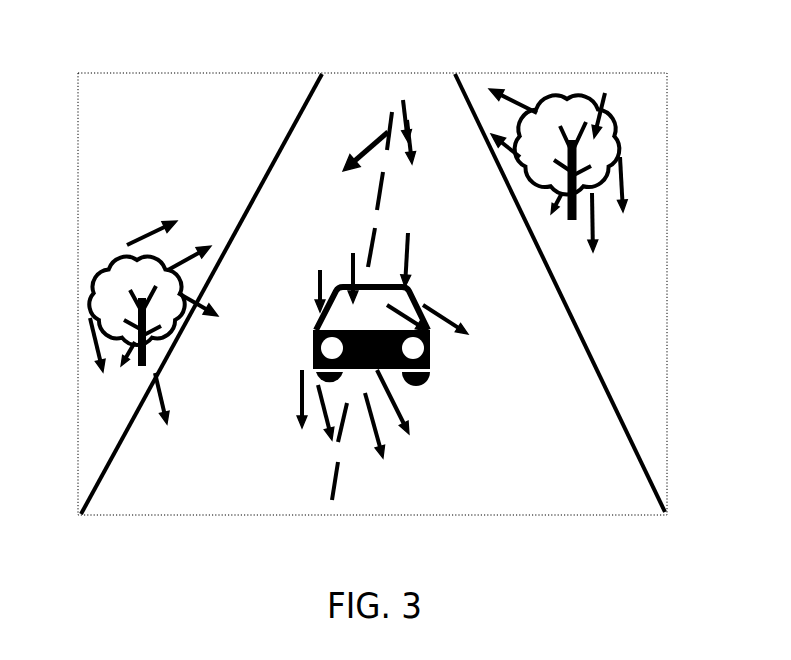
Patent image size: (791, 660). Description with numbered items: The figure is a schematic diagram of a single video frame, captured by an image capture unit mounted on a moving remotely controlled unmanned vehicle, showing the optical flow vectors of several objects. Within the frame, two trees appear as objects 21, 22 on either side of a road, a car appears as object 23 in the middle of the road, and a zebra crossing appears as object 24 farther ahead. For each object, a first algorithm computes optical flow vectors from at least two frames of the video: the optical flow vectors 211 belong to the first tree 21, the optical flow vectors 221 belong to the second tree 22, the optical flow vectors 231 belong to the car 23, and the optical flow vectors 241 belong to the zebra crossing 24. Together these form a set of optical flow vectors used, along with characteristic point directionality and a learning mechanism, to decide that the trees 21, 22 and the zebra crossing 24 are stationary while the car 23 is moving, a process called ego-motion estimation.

The object (tree) 21 is at (117, 292).
The optical flow vectors 211 is at (147, 388).
The object (tree) 22 is at (583, 148).
The optical flow vectors 221 is at (626, 183).
The object (car) 23 is at (433, 348).
The optical flow vectors 231 is at (412, 420).
The object (zebra crossing) 24 is at (382, 192).
The optical flow vectors 241 is at (365, 148).